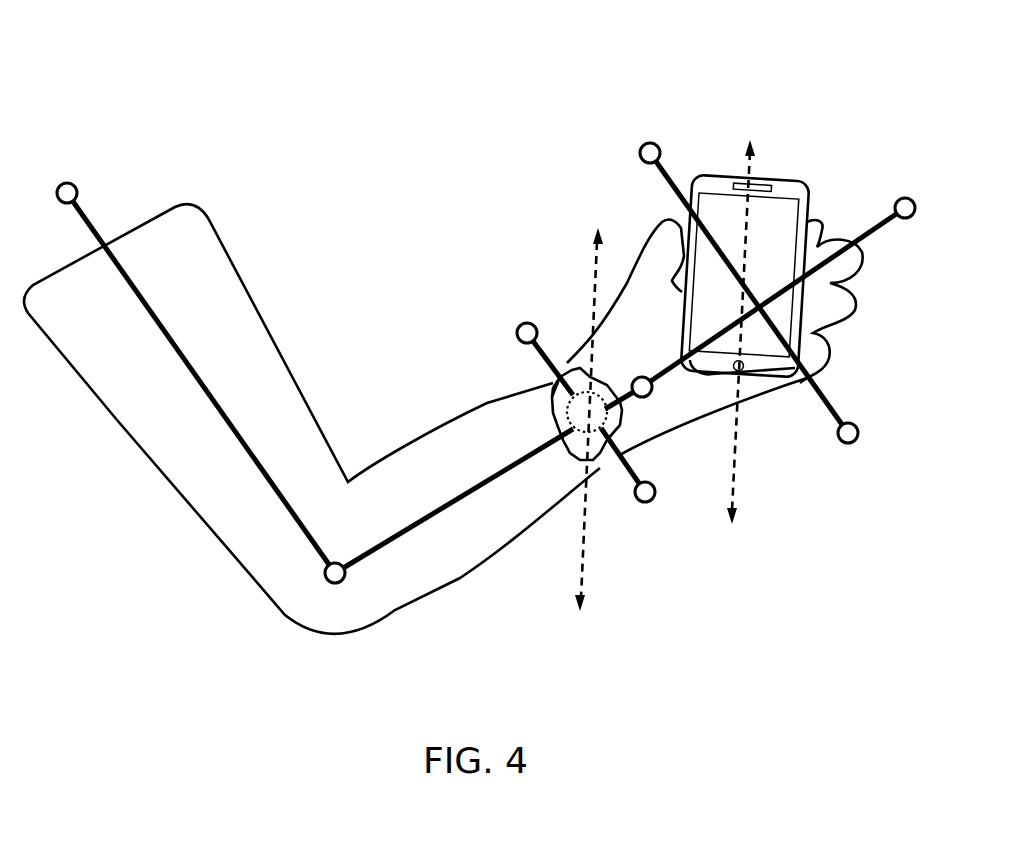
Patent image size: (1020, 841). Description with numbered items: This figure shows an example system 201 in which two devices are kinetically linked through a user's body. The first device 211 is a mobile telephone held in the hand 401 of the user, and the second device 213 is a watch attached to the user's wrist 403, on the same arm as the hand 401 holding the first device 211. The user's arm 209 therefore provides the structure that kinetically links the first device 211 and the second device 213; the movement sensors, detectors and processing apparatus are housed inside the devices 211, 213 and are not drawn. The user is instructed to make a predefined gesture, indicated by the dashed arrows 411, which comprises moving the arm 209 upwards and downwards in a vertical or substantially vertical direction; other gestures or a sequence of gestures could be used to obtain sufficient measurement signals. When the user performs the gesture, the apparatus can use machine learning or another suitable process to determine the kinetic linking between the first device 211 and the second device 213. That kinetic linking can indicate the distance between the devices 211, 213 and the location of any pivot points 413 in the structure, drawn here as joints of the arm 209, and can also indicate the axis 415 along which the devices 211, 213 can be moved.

The system 201 is at (552, 116).
The arm 209 is at (427, 610).
The first device 211 is at (790, 177).
The second device 213 is at (607, 463).
The hand 401 is at (763, 393).
The wrist 403 is at (640, 452).
The dashed arrows 411 is at (580, 570).
The pivot points 413 is at (641, 377).
The axis 415 is at (532, 324).